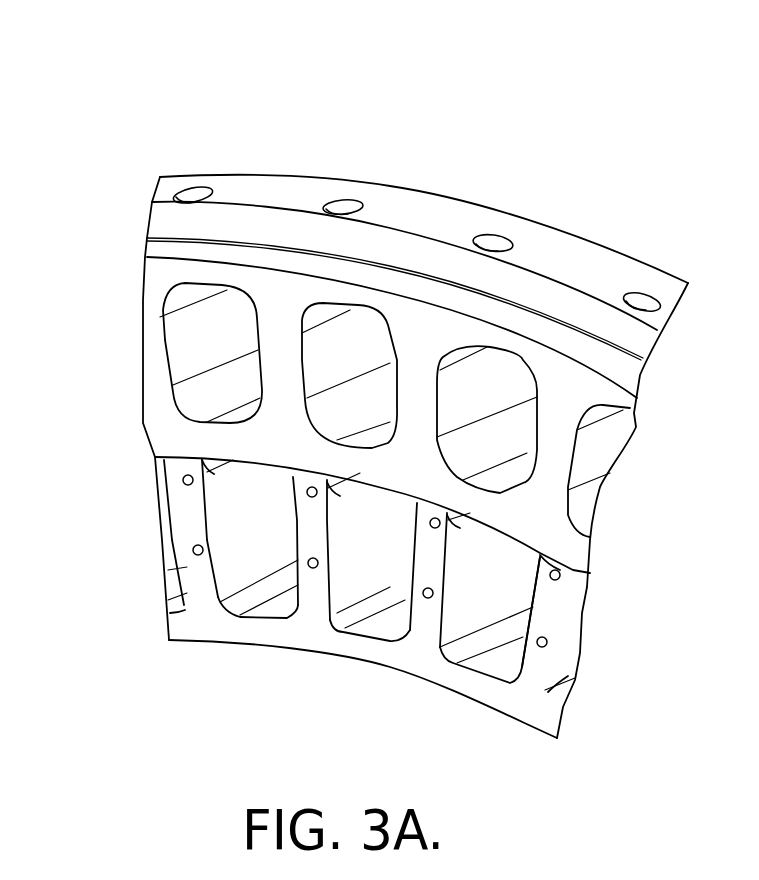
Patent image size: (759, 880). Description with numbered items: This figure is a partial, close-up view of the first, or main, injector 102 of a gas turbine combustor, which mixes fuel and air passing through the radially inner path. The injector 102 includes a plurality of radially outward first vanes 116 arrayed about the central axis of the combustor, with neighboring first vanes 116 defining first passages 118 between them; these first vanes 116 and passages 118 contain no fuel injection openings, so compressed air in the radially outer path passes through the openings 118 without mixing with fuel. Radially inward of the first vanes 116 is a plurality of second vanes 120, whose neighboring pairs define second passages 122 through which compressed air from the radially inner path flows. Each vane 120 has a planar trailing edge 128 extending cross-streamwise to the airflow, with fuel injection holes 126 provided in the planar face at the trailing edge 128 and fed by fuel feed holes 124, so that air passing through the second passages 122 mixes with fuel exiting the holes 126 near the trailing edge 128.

The first injector 102 is at (373, 396).
The first vanes 116 is at (417, 380).
The first passages 118 is at (195, 340).
The second vanes 120 is at (313, 543).
The second passages 122 is at (371, 576).
The fuel feed holes 124 is at (493, 243).
The fuel injection holes 126 is at (429, 600).
The planar trailing edge 128 is at (550, 610).